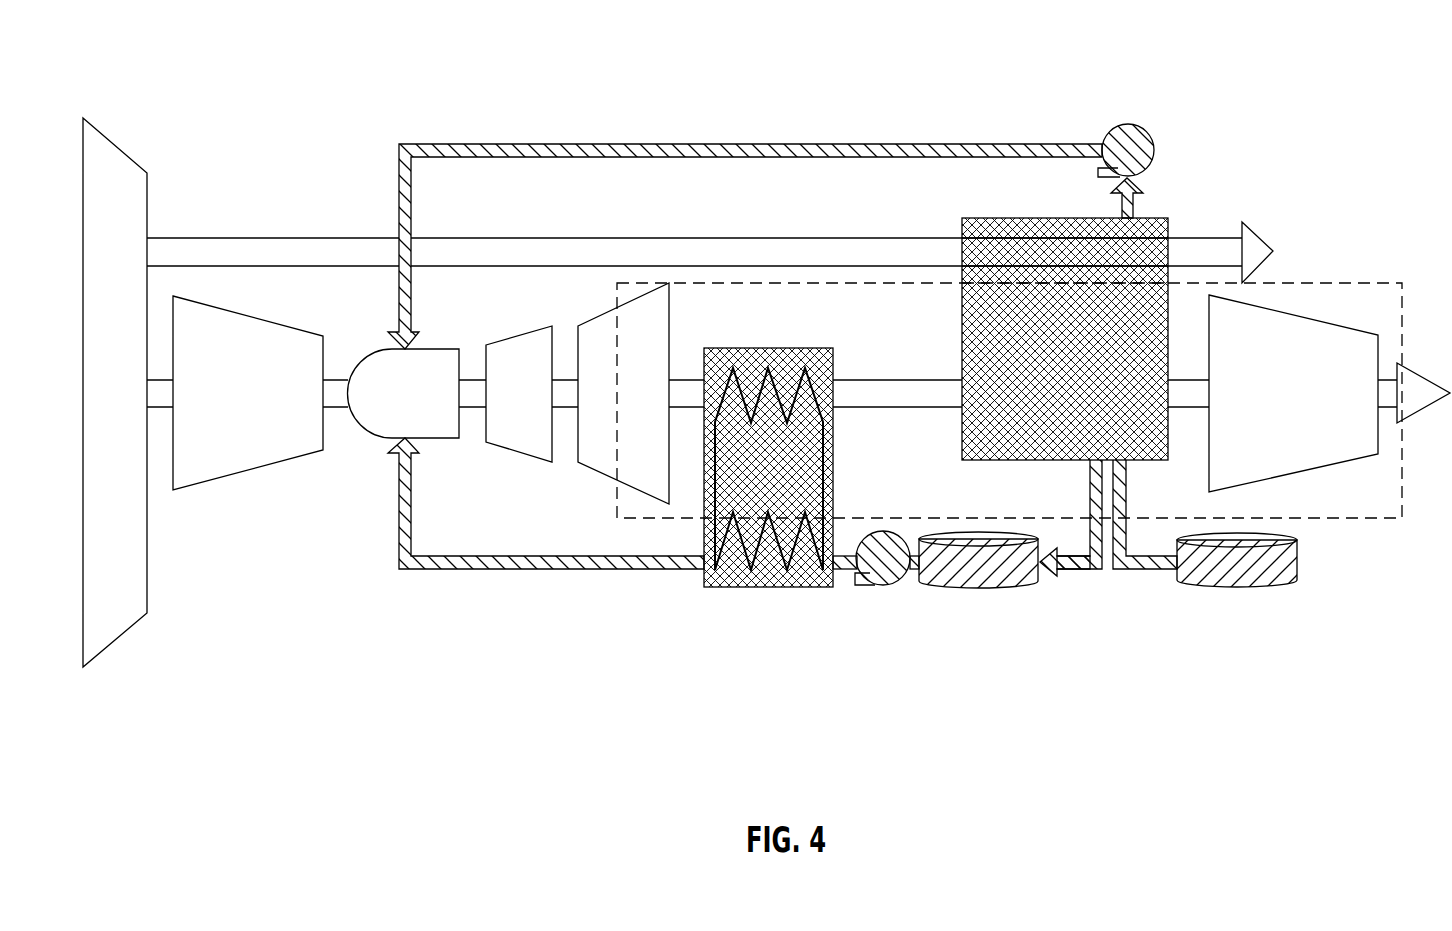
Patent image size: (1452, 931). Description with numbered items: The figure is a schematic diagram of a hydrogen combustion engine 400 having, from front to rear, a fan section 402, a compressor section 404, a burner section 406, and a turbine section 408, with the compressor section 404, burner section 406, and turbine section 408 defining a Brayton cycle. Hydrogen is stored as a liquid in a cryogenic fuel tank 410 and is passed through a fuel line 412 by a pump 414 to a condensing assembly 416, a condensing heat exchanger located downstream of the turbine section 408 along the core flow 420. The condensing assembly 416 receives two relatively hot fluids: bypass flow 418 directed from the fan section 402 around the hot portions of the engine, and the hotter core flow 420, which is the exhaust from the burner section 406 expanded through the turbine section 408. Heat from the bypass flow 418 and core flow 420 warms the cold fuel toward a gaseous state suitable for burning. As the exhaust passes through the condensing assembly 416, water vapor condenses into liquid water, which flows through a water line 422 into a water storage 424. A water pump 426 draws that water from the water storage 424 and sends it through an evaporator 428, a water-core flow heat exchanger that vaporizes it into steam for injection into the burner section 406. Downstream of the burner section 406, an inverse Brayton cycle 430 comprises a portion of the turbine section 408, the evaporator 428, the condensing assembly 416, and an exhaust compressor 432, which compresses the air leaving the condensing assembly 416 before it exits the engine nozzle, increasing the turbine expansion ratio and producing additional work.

The hydrogen combustion engine 400 is at (1320, 84).
The fan section 402 is at (118, 646).
The compressor section 404 is at (263, 479).
The burner section 406 is at (377, 441).
The turbine section 408 is at (524, 464).
The cryogenic fuel tank 410 is at (1231, 591).
The fuel line 412 is at (765, 143).
The pump 414 is at (1128, 124).
The condensing assembly 416 is at (993, 217).
The bypass flow 418 is at (715, 237).
The core flow 420 is at (895, 378).
The water line 422 is at (550, 571).
The water storage 424 is at (975, 591).
The water pump 426 is at (883, 587).
The evaporator 428 is at (768, 589).
The inverse Brayton cycle 430 is at (1352, 520).
The exhaust compressor 432 is at (1310, 465).